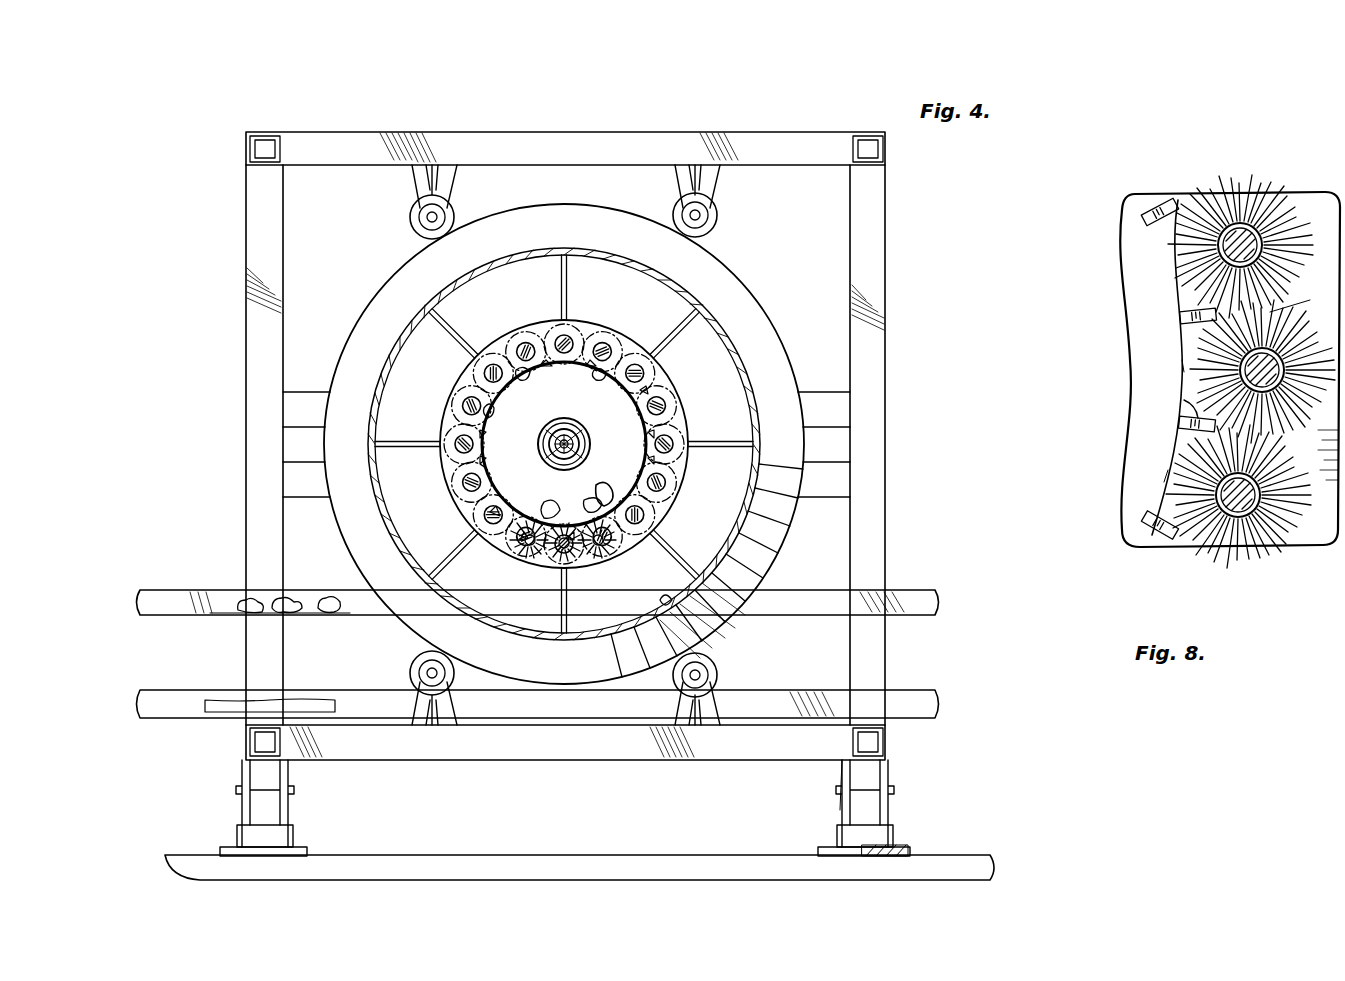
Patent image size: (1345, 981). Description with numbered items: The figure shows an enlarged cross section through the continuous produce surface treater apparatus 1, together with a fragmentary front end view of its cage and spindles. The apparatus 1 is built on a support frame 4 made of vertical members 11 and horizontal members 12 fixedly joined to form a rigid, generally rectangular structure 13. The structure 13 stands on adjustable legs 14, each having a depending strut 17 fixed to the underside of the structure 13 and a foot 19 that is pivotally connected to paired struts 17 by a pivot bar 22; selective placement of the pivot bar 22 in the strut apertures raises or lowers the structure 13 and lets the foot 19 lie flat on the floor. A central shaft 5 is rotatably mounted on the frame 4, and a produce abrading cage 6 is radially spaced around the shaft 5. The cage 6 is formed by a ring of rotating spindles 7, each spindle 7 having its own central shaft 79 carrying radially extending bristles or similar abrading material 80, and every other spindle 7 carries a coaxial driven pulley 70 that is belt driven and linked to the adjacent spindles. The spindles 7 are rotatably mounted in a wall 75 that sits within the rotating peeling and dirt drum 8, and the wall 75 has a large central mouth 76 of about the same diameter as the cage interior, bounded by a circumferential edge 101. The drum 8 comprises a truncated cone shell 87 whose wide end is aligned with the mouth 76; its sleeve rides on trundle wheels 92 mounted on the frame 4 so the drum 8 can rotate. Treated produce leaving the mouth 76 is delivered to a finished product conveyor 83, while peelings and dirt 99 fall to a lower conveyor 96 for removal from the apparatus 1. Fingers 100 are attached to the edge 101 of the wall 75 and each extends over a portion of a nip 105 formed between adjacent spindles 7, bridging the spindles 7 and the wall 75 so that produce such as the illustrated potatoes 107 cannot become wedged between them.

In FIG. 4, the continuous produce surface treater apparatus 1 is at (908, 437).
In FIG. 4, the support frame 4 is at (887, 218).
In FIG. 4, the central shaft 5 is at (556, 422).
In FIG. 4, the produce abrading cage 6 is at (633, 437).
In FIG. 8, the produce abrading cage 6 is at (1130, 263).
In FIG. 4, the spindles 7 is at (470, 385).
In FIG. 8, the spindles 7 is at (1296, 280).
In FIG. 4, the rotating peeling and dirt drum 8 is at (745, 290).
In FIG. 4, the vertical members 11 is at (887, 282).
In FIG. 4, the horizontal members 12 is at (745, 132).
In FIG. 4, the rectangular shaped structure 13 is at (887, 568).
In FIG. 4, the legs 14 is at (292, 826).
In FIG. 4, the depending strut 17 is at (890, 770).
In FIG. 4, the foot 19 is at (896, 846).
In FIG. 4, the pivot bar 22 is at (250, 792).
In FIG. 4, the driven pulley 70 is at (618, 496).
In FIG. 4, the wall 75 is at (665, 519).
In FIG. 8, the wall 75 is at (1178, 455).
In FIG. 4, the central mouth 76 is at (538, 376).
In FIG. 8, the central mouth 76 is at (1180, 288).
In FIG. 8, the central shaft 79 is at (1292, 325).
In FIG. 8, the abrading material 80 is at (1296, 196).
In FIG. 4, the finished product conveyor 83 is at (928, 590).
In FIG. 4, the shell 87 is at (670, 612).
In FIG. 4, the trundle wheels 92 is at (455, 216).
In FIG. 4, the conveyor 96 is at (910, 690).
In FIG. 4, the peelings and dirt 99 is at (305, 696).
In FIG. 8, the fingers 100 is at (1162, 200).
In FIG. 4, the circumferential edge 101 is at (642, 412).
In FIG. 8, the circumferential edge 101 is at (1186, 364).
In FIG. 8, the nip 105 is at (1184, 400).
In FIG. 4, the potatoes 107 is at (560, 516).